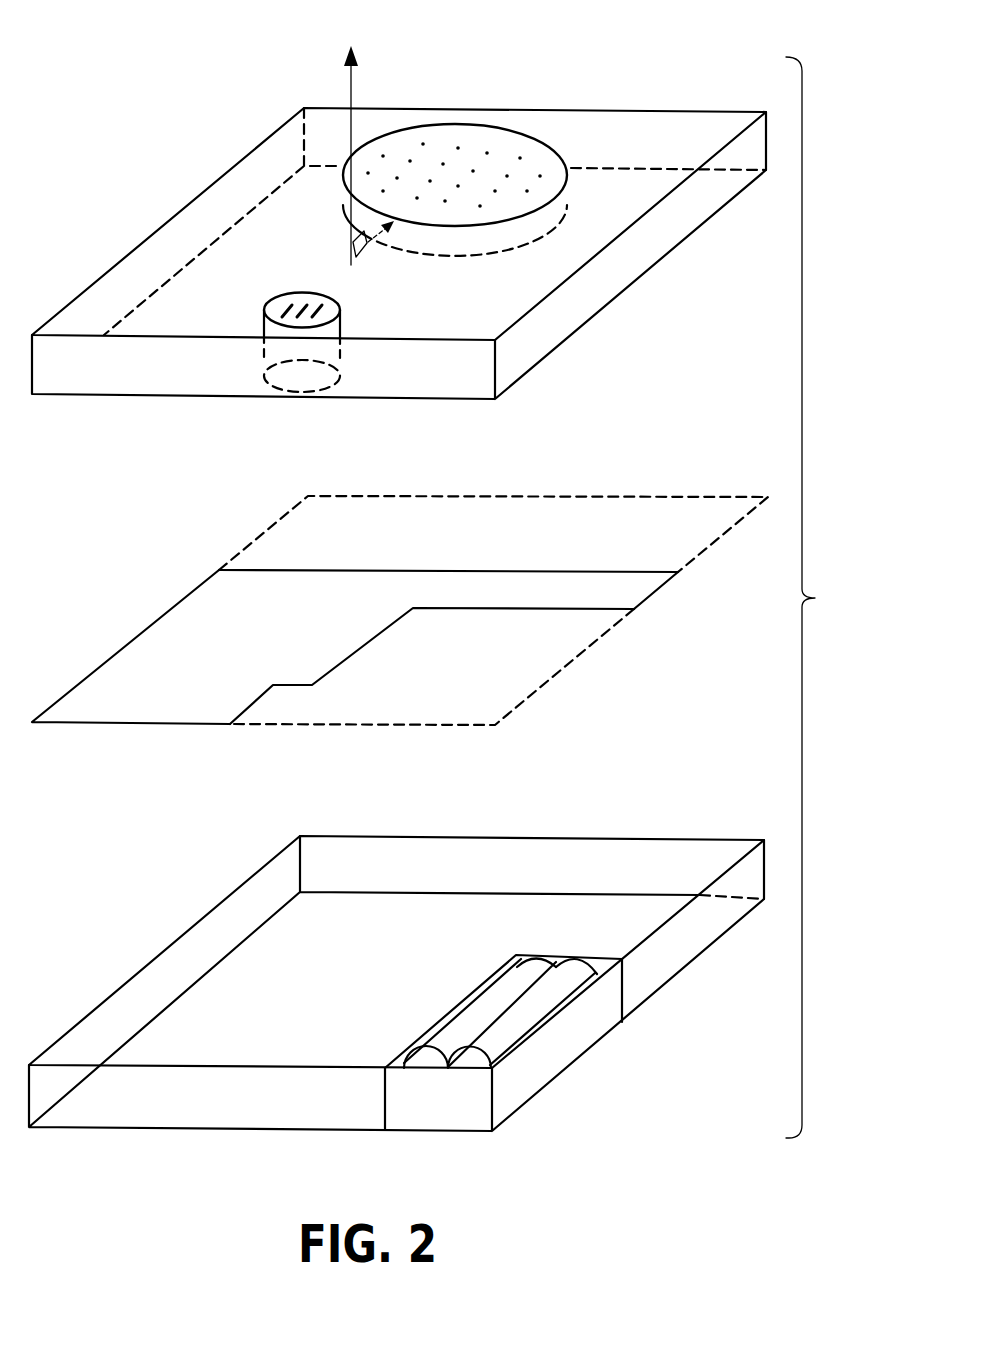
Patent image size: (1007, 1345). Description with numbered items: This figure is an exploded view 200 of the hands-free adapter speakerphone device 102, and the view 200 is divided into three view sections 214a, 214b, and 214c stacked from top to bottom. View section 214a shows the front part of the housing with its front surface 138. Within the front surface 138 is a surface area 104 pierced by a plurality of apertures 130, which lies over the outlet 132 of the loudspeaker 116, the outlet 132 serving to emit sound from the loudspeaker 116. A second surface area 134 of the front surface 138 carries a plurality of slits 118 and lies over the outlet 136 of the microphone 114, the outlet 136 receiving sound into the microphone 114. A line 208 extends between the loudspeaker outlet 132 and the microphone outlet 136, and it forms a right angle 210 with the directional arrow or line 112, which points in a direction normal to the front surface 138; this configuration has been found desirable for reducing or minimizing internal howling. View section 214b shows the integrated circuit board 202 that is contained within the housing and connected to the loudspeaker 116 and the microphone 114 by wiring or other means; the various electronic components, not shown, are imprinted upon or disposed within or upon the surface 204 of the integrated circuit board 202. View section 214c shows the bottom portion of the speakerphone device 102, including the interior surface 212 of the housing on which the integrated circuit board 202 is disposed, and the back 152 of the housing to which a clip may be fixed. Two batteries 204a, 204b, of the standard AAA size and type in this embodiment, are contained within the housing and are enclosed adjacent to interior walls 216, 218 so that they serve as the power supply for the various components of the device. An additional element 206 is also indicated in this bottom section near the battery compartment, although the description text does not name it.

The exploded view 200 is at (82, 30).
The hands-free adapter speakerphone device 102 is at (827, 597).
The surface area 104 is at (475, 146).
The directional arrow 112 is at (353, 93).
The microphone 114 is at (347, 355).
The loudspeaker 116 is at (463, 261).
The slits 118 is at (283, 305).
The apertures 130 is at (521, 158).
The outlet of the loudspeaker 132 is at (562, 191).
The surface area 134 is at (329, 295).
The outlet of the microphone 136 is at (296, 356).
The front surface 138 is at (282, 218).
The back of the housing 152 is at (401, 918).
The integrated circuit board 202 is at (400, 610).
The surface of the integrated circuit board 204 is at (347, 597).
The battery 204a is at (520, 971).
The battery 204b is at (566, 975).
The channel 206 is at (452, 983).
The line 208 is at (327, 289).
The right angle 210 is at (360, 255).
The interior surface 212 is at (222, 993).
The view section 214a is at (399, 253).
The view section 214b is at (620, 654).
The view section 214c is at (396, 983).
The interior wall 216 is at (406, 1058).
The interior wall 218 is at (624, 959).